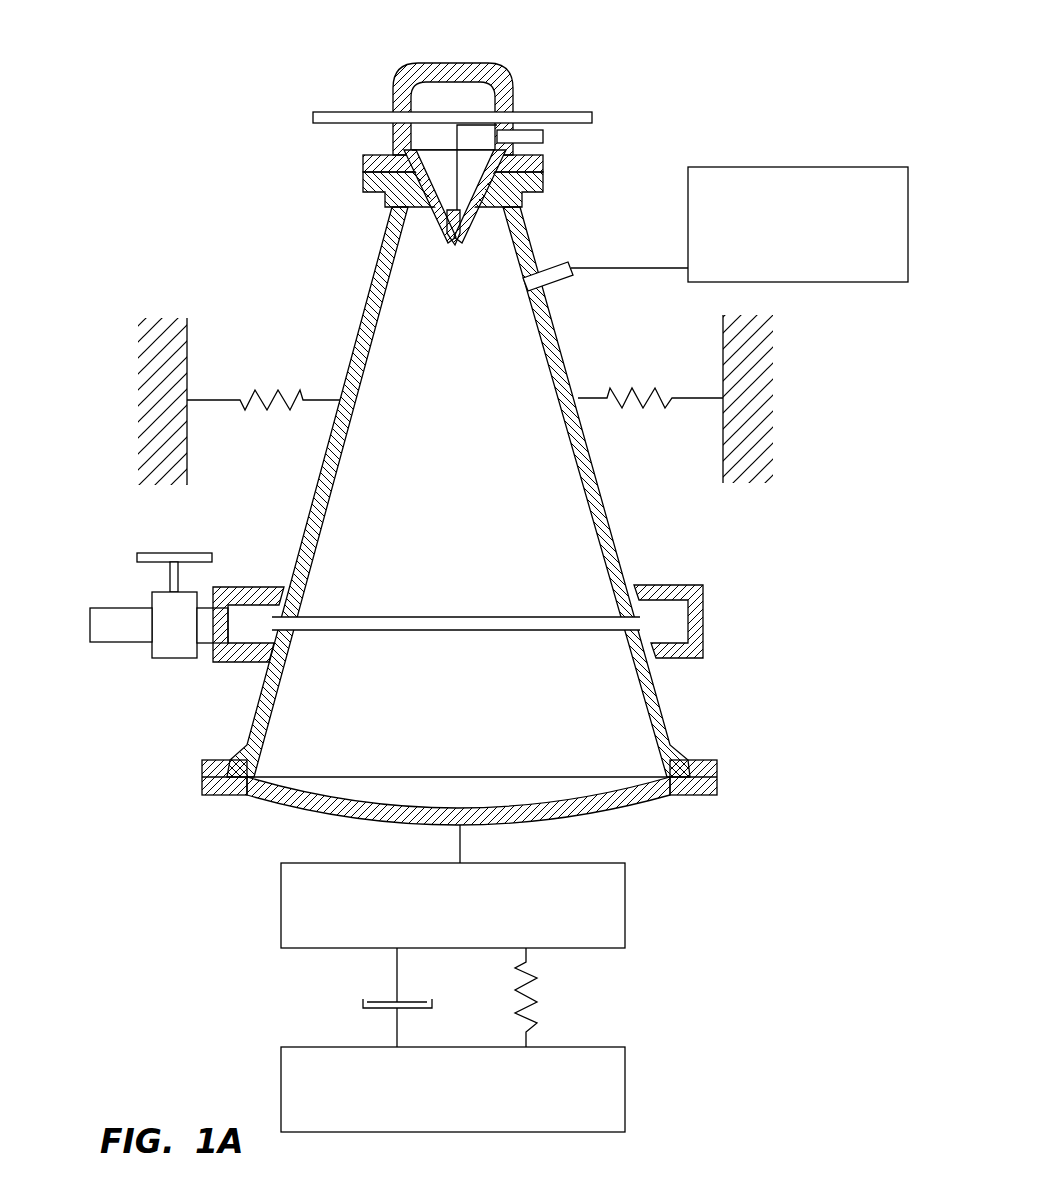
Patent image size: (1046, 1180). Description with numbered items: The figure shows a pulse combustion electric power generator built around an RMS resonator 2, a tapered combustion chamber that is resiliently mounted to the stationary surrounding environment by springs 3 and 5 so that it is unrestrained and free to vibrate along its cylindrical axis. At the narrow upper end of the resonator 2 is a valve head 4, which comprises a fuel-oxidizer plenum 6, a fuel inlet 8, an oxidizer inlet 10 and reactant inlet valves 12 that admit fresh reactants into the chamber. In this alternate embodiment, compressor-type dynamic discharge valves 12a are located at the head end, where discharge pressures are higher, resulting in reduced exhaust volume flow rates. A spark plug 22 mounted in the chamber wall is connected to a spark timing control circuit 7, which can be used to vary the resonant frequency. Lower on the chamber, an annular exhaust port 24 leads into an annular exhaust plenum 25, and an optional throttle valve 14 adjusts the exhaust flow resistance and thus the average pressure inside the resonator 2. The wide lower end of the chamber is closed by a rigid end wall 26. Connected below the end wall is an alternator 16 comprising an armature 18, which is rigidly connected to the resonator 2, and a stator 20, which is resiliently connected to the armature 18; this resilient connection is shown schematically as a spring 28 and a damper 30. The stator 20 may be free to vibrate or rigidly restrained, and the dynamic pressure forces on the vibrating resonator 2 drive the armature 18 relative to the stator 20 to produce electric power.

The RMS resonator 2 is at (367, 305).
The spring 3 is at (267, 418).
The valve head 4 is at (522, 82).
The spring 5 is at (628, 413).
The fuel-oxidizer plenum 6 is at (473, 108).
The spark timing control circuit 7 is at (797, 167).
The fuel inlet 8 is at (392, 118).
The oxidizer inlet 10 is at (523, 117).
The reactant inlet valves 12 is at (400, 204).
The compressor-type dynamic discharge valves 12a is at (507, 204).
The throttle valve 14 is at (178, 660).
The alternator 16 is at (250, 981).
The armature 18 is at (625, 915).
The stator 20 is at (625, 1085).
The spark plug 22 is at (557, 287).
The annular exhaust port 24 is at (438, 623).
The annular exhaust plenum 25 is at (662, 630).
The rigid end wall 26 is at (300, 812).
The spring 28 is at (553, 1022).
The damper 30 is at (352, 1008).